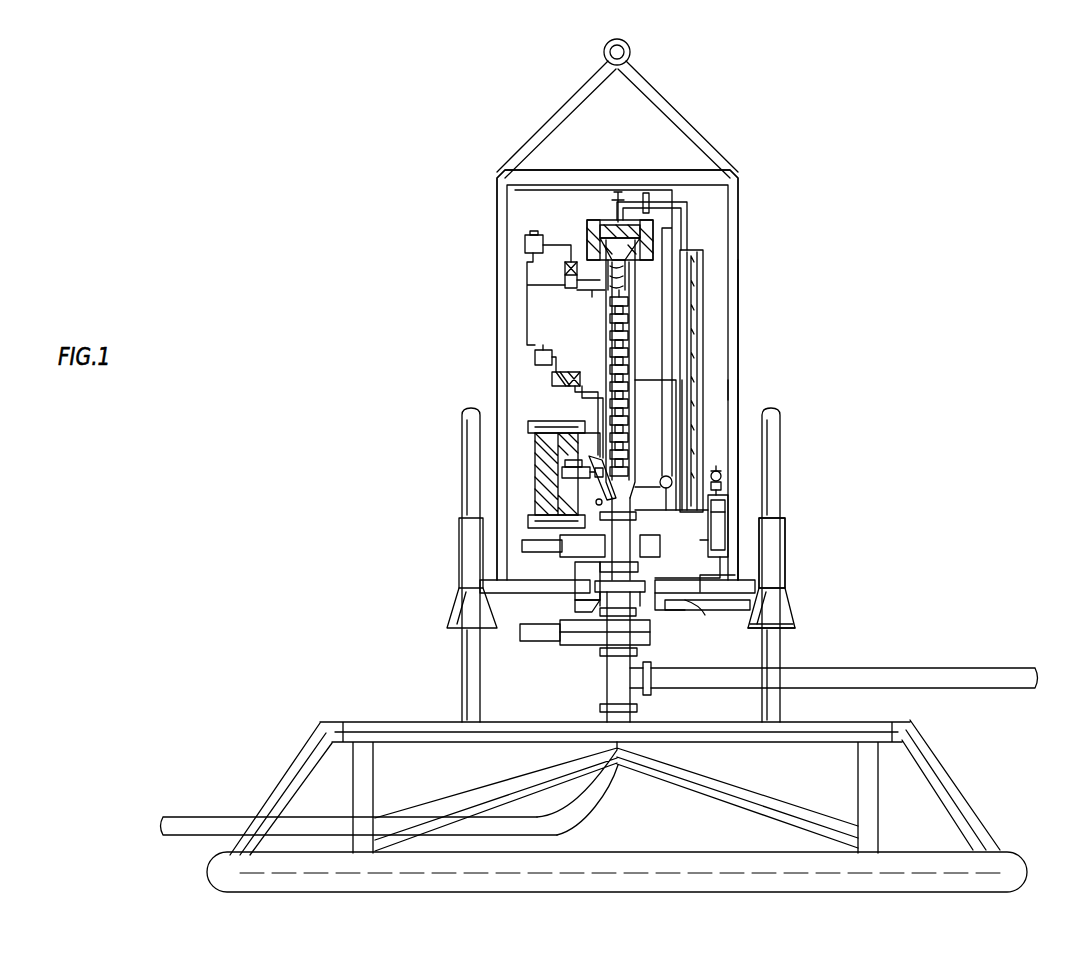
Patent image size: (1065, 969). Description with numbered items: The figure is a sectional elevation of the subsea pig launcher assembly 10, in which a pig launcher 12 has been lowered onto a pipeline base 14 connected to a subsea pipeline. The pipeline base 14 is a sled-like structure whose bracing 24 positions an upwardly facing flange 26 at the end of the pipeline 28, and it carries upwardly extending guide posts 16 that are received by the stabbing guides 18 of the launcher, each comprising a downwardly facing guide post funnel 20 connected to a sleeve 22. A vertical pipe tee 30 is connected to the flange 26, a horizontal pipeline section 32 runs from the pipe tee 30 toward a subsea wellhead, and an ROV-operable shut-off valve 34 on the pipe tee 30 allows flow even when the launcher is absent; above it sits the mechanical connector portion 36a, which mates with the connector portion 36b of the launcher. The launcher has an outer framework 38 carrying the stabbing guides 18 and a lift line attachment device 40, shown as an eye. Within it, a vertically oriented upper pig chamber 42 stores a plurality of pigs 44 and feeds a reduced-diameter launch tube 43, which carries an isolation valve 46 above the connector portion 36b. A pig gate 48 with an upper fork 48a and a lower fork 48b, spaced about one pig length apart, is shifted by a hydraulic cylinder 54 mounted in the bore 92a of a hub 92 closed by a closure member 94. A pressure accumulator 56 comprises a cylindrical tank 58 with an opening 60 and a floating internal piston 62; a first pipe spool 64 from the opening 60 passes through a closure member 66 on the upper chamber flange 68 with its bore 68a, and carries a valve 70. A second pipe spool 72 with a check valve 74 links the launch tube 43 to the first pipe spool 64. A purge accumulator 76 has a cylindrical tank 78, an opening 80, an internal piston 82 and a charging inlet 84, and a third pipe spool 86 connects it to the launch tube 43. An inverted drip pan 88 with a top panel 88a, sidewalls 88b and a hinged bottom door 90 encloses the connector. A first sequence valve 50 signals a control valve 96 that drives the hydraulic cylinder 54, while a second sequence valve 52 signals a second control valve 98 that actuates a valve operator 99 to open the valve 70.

The subsea pig launcher assembly 10 is at (345, 212).
The pig launcher 12 is at (492, 230).
The pipeline base 14 is at (292, 750).
The guide posts 16 is at (784, 428).
The stabbing guides 18 is at (452, 610).
The guide post funnels 20 is at (797, 626).
The sleeves 22 is at (786, 556).
The bracing 24 is at (330, 722).
The flange 26 is at (600, 708).
The pipeline 28 is at (205, 817).
The vertical pipe tee 30 is at (607, 675).
The horizontal pipeline section 32 is at (995, 668).
The shut-off valve 34 is at (651, 665).
The mechanical connector portion 36a is at (608, 592).
The mating connector portion 36b is at (580, 640).
The outer framework 38 is at (740, 262).
The lift line attachment device 40 is at (631, 48).
The upper pig chamber 42 is at (640, 384).
The launch tube 43 is at (598, 566).
The pigs 44 is at (642, 352).
The isolation valve 46 is at (522, 546).
The pig gate 48 is at (597, 480).
The upper fork 48a is at (595, 470).
The lower fork 48b is at (718, 490).
The first sequence valve 50 is at (535, 356).
The second sequence valve 52 is at (530, 236).
The hydraulic cylinder 54 is at (535, 478).
The pressure accumulator 56 is at (712, 385).
The cylindrical tank 58 is at (704, 296).
The opening 60 is at (700, 232).
The internal piston 62 is at (724, 505).
The first pipe spool 64 is at (733, 172).
The closure member 66 is at (607, 268).
The upper chamber flange 68 is at (590, 232).
The bore 68a is at (618, 220).
The valve 70 is at (704, 292).
The second pipe spool 72 is at (673, 418).
The check valve 74 is at (672, 480).
The purge accumulator 76 is at (742, 550).
The cylindrical tank 78 is at (708, 545).
The opening 80 is at (735, 580).
The internal piston 82 is at (722, 522).
The charging inlet 84 is at (719, 472).
The third pipe spool 86 is at (706, 582).
The inverted drip pan 88 is at (578, 584).
The top panel 88a is at (582, 577).
The sidewalls 88b is at (660, 605).
The bottom door 90 is at (748, 614).
The hub 92 is at (578, 398).
The bore 92a is at (599, 502).
The closure member 94 is at (562, 470).
The control valve 96 is at (583, 392).
The second control valve 98 is at (565, 274).
The valve operator 99 is at (600, 290).